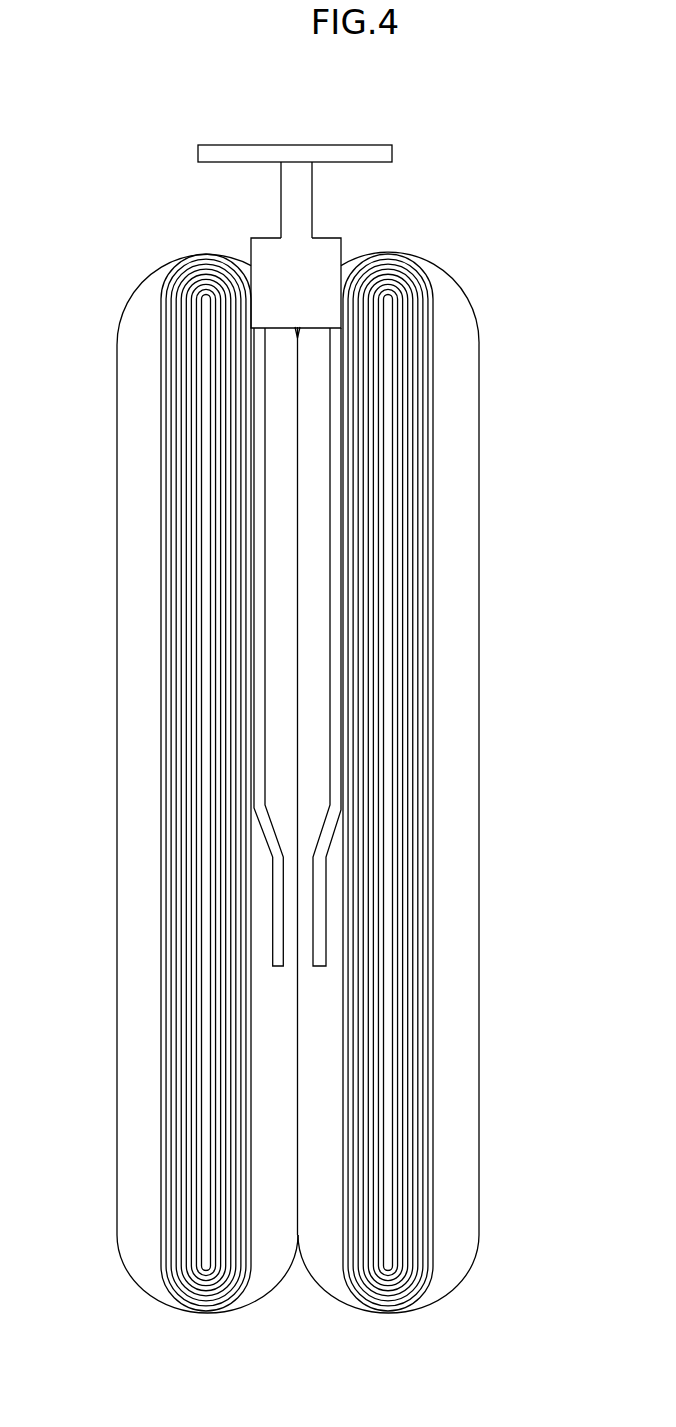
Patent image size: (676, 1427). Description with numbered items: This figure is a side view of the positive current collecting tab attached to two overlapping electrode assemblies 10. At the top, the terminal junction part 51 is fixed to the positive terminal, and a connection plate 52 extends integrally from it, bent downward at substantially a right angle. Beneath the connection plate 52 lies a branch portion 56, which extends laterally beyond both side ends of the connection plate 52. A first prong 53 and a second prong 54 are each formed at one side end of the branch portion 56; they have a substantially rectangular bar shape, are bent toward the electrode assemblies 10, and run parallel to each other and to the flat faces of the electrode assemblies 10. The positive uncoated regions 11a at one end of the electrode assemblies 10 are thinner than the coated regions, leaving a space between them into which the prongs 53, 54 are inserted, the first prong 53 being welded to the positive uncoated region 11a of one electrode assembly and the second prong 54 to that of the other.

The electrode assembly 10 is at (455, 497).
The positive uncoated region 11a is at (417, 392).
The terminal junction part 51 is at (370, 150).
The connection plate 52 is at (295, 180).
The first prong 53 is at (258, 577).
The second prong 54 is at (335, 585).
The branch portion 56 is at (323, 253).